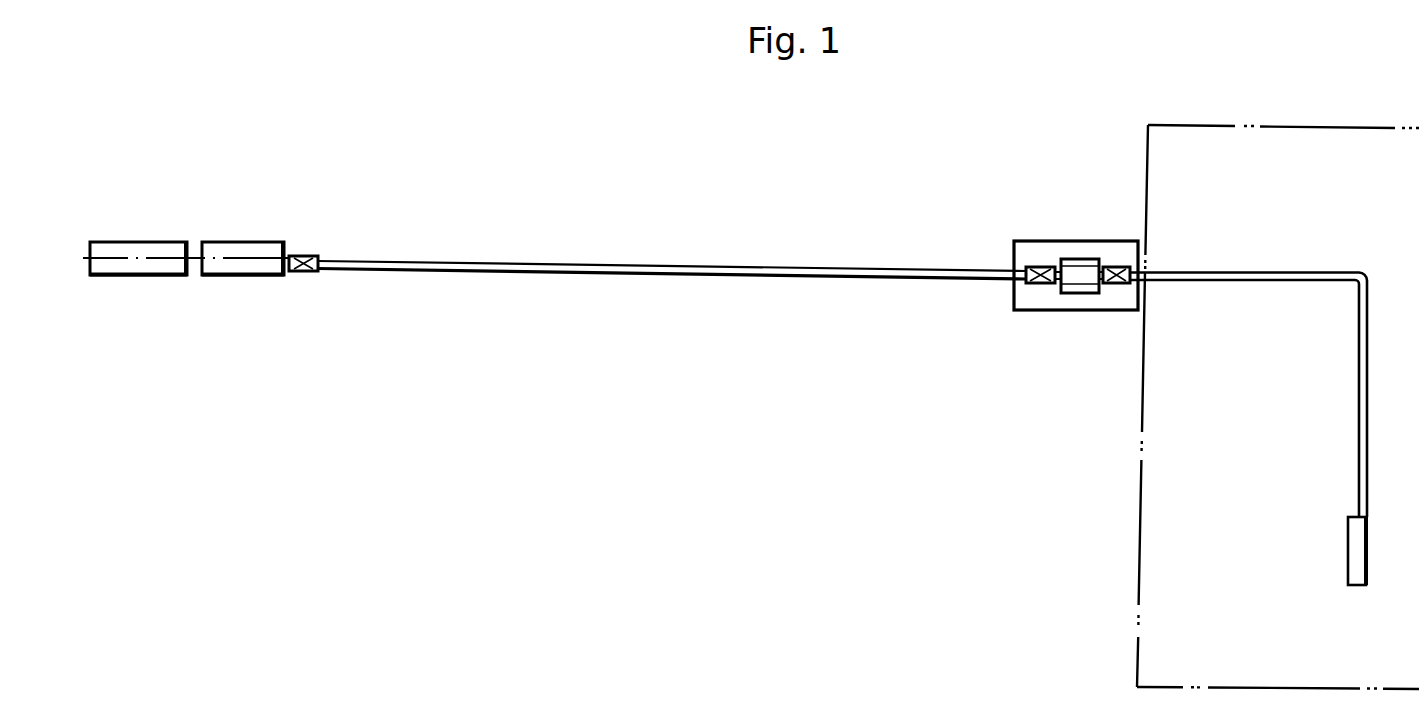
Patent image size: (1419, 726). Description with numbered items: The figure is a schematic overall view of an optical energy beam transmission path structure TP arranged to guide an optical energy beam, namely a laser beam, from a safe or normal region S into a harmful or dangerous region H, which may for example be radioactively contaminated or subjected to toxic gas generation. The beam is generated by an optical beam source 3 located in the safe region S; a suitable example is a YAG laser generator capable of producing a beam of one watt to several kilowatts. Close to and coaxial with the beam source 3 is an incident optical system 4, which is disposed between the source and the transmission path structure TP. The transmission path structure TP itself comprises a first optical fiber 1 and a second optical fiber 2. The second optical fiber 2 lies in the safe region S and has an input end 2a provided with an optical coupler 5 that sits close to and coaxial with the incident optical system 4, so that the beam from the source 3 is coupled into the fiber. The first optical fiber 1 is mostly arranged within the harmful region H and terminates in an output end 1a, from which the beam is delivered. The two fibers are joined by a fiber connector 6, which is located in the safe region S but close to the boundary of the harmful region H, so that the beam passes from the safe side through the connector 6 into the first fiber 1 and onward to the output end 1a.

The first optical fiber 1 is at (1358, 405).
The output end 1a is at (1353, 568).
The second optical fiber 2 is at (738, 262).
The input end 2a is at (330, 273).
The optical beam source 3 is at (152, 242).
The incident optical system 4 is at (250, 242).
The optical coupler 5 is at (310, 253).
The fiber connector 6 is at (1086, 250).
The optical energy beam transmission path structure TP is at (927, 222).
The safe region S is at (625, 453).
The harmful region H is at (1141, 528).